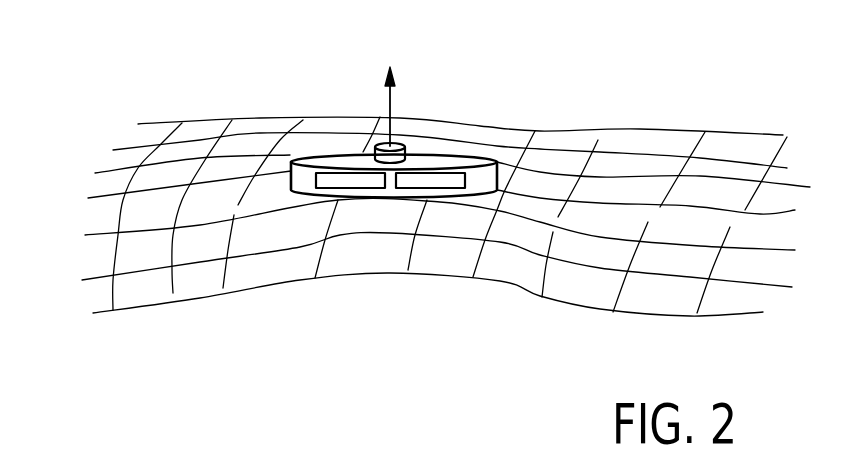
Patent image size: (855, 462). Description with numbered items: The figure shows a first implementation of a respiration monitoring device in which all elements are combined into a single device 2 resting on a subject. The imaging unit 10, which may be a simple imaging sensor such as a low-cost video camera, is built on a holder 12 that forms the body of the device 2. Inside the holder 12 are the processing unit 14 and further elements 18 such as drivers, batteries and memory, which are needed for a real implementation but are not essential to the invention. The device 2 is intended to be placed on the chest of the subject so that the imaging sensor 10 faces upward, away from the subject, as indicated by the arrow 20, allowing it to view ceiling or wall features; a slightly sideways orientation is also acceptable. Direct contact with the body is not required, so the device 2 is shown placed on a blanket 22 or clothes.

The single device 2 is at (395, 180).
The imaging unit 10 is at (400, 148).
The holder 12 is at (303, 177).
The processing unit 14 is at (355, 182).
The further elements 18 is at (435, 182).
The arrow 20 is at (393, 110).
The blanket 22 is at (652, 292).